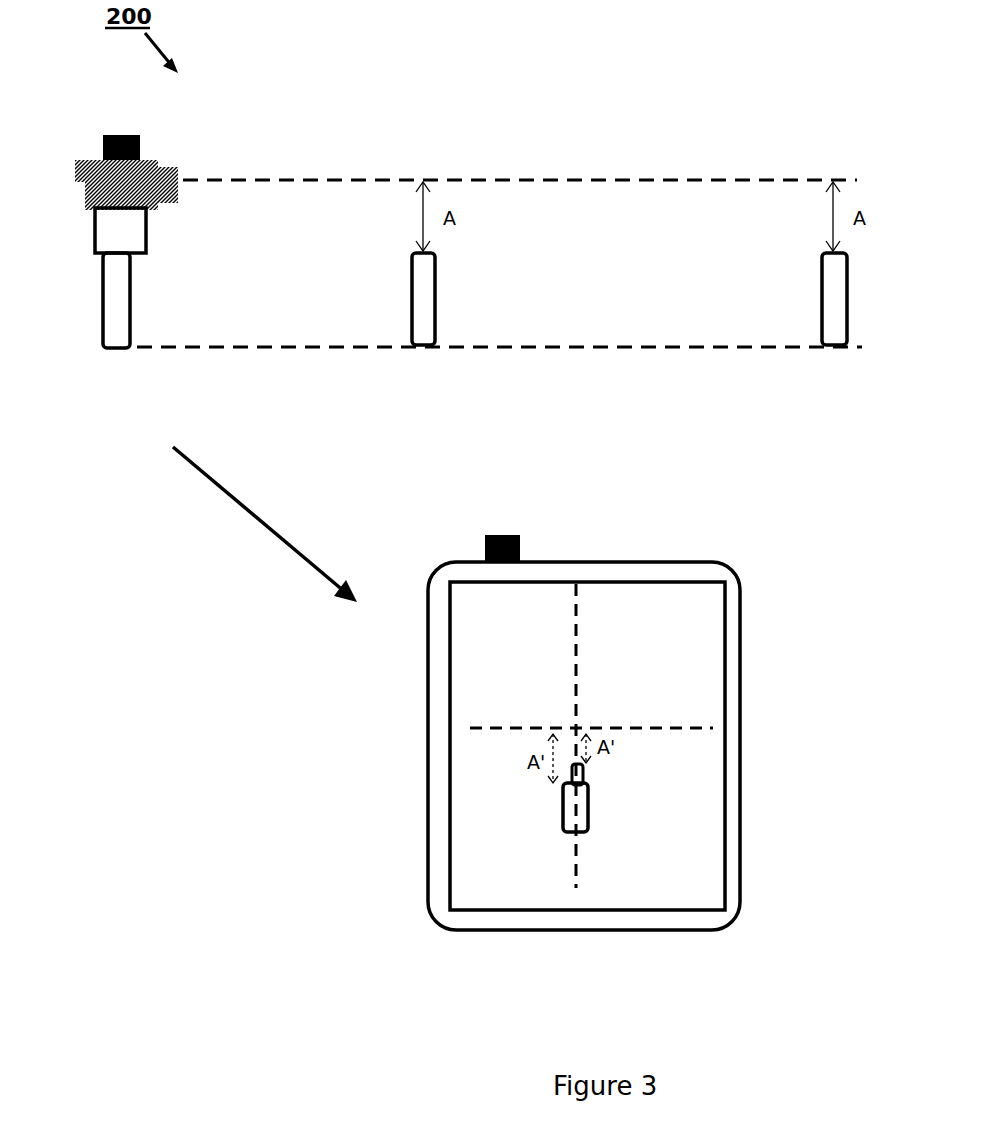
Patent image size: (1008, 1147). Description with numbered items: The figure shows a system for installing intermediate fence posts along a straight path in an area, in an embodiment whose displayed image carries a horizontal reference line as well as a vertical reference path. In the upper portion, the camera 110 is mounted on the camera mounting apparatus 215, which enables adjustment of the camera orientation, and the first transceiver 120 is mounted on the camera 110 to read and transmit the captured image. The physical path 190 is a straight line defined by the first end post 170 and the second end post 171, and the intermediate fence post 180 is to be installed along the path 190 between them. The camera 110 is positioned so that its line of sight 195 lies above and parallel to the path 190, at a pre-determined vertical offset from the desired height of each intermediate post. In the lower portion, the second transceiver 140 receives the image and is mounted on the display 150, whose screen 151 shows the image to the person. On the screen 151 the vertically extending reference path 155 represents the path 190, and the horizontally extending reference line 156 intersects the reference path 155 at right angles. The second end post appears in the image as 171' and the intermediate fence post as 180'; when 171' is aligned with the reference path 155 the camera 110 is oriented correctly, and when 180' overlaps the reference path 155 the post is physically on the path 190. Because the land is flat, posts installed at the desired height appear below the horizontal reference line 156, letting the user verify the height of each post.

The camera 110 is at (80, 160).
The first transceiver 120 is at (118, 135).
The second transceiver 140 is at (497, 535).
The display 150 is at (500, 930).
The screen 151 is at (693, 888).
The reference path 155 is at (585, 850).
The horizontally extending reference line 156 is at (668, 728).
The first end post 170 is at (112, 350).
The second end post 171 is at (810, 329).
The second end post in the image 171' is at (612, 791).
The intermediate fence post 180 is at (464, 325).
The intermediate fence post in the image 180' is at (640, 806).
The path 190 is at (283, 348).
The line of sight 195 is at (680, 180).
The camera mounting apparatus 215 is at (95, 230).